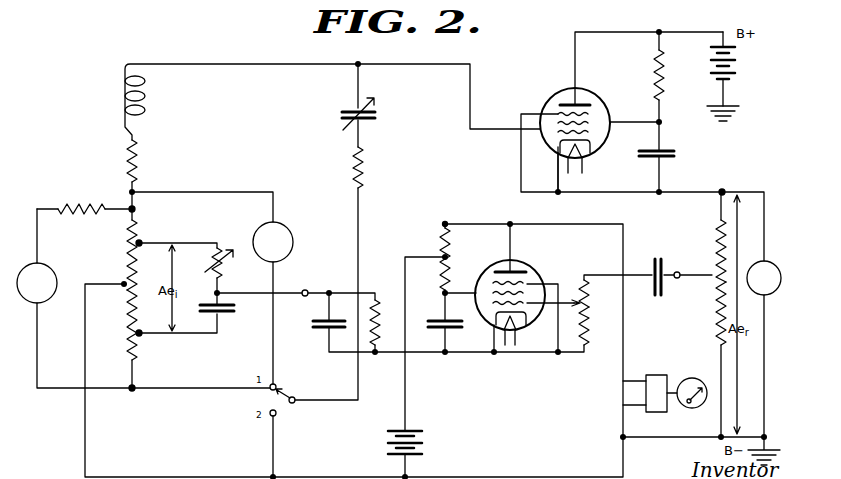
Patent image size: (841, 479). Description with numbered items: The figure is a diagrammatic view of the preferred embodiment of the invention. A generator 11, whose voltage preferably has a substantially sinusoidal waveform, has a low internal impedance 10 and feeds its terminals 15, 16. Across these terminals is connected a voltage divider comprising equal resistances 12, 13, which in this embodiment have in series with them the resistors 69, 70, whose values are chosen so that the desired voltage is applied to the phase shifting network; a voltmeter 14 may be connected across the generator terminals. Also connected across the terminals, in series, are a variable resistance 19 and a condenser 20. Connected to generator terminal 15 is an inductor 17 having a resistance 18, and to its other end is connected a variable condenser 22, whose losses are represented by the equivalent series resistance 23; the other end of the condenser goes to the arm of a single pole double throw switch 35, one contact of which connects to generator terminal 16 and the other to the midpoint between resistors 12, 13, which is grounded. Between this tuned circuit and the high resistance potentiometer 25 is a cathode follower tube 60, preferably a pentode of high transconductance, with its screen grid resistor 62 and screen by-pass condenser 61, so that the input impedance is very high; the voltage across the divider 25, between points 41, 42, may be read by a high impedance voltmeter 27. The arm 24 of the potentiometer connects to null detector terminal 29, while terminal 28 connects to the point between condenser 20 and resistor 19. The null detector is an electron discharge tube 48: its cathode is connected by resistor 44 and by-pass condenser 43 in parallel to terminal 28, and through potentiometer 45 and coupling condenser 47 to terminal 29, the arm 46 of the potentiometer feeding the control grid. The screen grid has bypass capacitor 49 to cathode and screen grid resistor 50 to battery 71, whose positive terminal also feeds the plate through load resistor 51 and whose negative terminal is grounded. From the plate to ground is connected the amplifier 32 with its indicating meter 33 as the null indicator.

The internal impedance 10 is at (86, 203).
The generator 11 is at (30, 262).
The resistance 12 is at (124, 276).
The resistance 13 is at (126, 326).
The voltmeter 14 is at (293, 240).
The generator terminal 15 is at (136, 209).
The generator terminal 16 is at (132, 392).
The inductor 17 is at (145, 95).
The resistance 18 is at (138, 175).
The variable resistance 19 is at (227, 264).
The condenser 20 is at (224, 313).
The variable condenser 22 is at (340, 113).
The equivalent series resistance 23 is at (363, 180).
The arm 24 is at (704, 268).
The high resistance potentiometer 25 is at (716, 300).
The high impedance voltmeter 27 is at (770, 296).
The null detector terminal 28 is at (306, 290).
The null detector terminal 29 is at (677, 279).
The amplifier 32 is at (660, 374).
The indicating meter 33 is at (686, 378).
The single pole double throw switch 35 is at (290, 392).
The point 41 is at (724, 188).
The point 42 is at (776, 436).
The by-pass condenser 43 is at (312, 332).
The resistor 44 is at (385, 318).
The potentiometer 45 is at (588, 325).
The arm 46 is at (568, 298).
The coupling condenser 47 is at (655, 256).
The electron discharge tube 48 is at (532, 272).
The bypass capacitor 49 is at (438, 330).
The screen grid resistor 50 is at (452, 275).
The load resistor 51 is at (440, 248).
The cathode follower tube 60 is at (553, 90).
The screen by-pass condenser 61 is at (676, 150).
The screen grid resistor 62 is at (654, 80).
The resistor 69 is at (140, 237).
The resistor 70 is at (136, 345).
The battery 71 is at (426, 442).